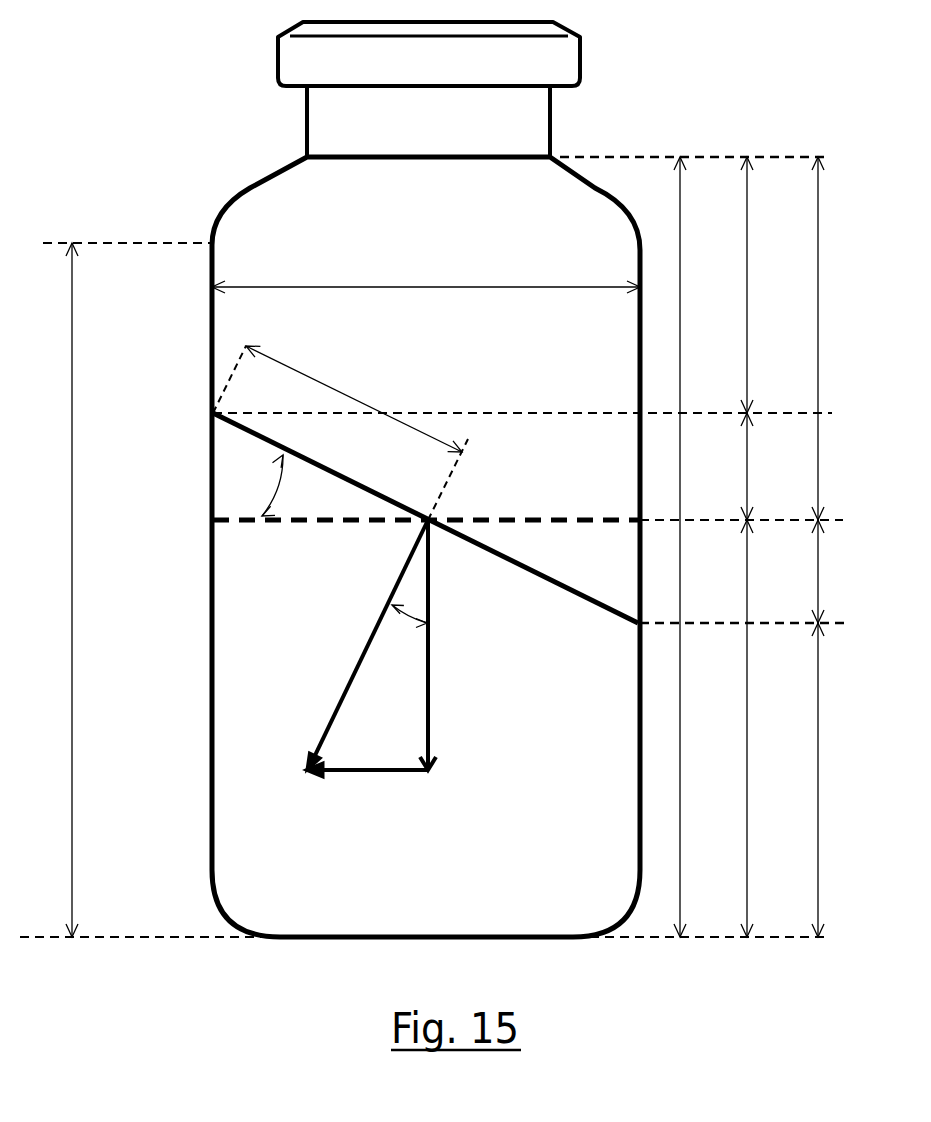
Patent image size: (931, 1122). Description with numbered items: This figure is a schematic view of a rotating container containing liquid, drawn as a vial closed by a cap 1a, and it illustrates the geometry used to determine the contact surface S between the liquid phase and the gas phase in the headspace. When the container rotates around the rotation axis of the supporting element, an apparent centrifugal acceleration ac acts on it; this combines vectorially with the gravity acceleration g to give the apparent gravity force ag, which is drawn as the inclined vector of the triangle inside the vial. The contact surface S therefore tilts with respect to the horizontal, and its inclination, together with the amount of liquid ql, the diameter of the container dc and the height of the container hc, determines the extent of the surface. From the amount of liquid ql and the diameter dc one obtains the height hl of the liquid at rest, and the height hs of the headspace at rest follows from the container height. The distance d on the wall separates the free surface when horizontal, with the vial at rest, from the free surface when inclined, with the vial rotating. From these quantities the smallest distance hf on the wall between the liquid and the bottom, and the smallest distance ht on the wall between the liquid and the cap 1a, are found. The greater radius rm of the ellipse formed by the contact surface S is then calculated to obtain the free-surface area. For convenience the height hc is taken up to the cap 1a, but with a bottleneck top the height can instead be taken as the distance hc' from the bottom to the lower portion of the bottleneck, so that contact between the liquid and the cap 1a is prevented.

The cap 1a is at (525, 127).
The contact surface S is at (345, 482).
The greater radius of the ellipse rm is at (340, 433).
The apparent gravity force ag is at (367, 645).
The gravity acceleration g is at (437, 645).
The apparent centrifugal acceleration ac is at (367, 783).
The amount of liquid ql is at (353, 875).
The diameter of the container dc is at (426, 275).
The distance between bottom and lower portion of bottleneck hc' is at (89, 590).
The height of the container hc is at (693, 547).
The smallest distance between liquid and cap ht is at (761, 285).
The distance on the wall d is at (787, 518).
The height of the liquid hl is at (756, 728).
The height of the headspace hs is at (830, 338).
The smallest distance between liquid and bottom hf is at (832, 780).